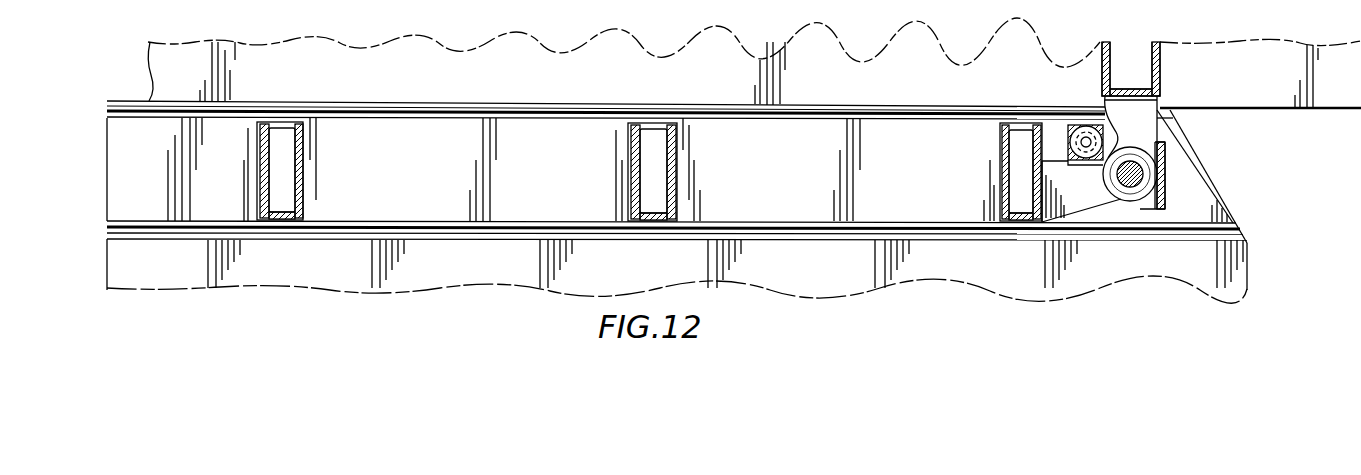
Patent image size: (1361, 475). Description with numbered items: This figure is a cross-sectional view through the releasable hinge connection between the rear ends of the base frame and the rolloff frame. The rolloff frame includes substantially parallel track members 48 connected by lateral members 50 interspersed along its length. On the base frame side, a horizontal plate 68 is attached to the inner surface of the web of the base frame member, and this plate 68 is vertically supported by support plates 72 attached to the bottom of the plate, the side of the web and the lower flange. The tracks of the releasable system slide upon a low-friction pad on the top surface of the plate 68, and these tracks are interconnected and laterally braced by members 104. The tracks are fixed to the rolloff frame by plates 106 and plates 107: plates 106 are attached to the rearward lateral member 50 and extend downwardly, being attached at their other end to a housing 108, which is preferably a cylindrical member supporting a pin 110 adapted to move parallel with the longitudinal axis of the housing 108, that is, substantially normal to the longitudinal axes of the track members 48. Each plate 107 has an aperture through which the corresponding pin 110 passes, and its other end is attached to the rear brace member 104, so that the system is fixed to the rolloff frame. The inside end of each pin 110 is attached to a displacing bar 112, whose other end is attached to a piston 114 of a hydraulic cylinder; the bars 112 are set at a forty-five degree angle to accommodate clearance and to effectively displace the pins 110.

The track member 48 is at (995, 60).
The lateral member 50 is at (1163, 64).
The horizontal plate 68 is at (487, 240).
The support plate 72 is at (372, 268).
The brace member 104 is at (673, 172).
The plate 106 is at (1146, 112).
The plate 107 is at (1085, 200).
The housing 108 is at (1147, 163).
The pin 110 is at (1245, 181).
The displacing bar 112 is at (1105, 110).
The piston 114 is at (1070, 157).